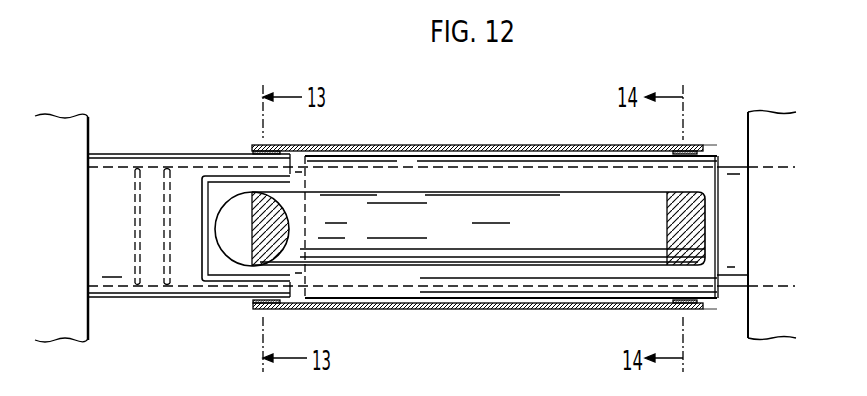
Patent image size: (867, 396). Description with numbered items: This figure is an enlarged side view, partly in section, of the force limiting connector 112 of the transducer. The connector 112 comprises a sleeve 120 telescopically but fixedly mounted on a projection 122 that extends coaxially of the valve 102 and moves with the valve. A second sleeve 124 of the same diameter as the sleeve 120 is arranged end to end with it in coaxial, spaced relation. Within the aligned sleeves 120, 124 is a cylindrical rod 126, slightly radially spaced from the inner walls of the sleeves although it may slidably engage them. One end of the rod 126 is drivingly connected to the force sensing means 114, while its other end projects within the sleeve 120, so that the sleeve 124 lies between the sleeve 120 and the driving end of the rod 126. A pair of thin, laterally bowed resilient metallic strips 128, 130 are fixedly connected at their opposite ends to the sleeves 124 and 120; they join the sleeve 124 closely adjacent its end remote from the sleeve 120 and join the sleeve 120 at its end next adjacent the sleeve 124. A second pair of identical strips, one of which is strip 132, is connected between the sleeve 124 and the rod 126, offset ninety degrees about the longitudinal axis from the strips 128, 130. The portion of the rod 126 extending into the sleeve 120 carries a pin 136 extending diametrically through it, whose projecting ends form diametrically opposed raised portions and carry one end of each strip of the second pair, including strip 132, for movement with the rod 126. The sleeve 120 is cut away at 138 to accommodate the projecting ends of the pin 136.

The valve 102 is at (92, 133).
The force sensing means 114 is at (748, 325).
The sleeve 120 is at (160, 155).
The projection 122 is at (144, 282).
The cylindrical rod 126 is at (737, 167).
The force limiting connector 112 is at (373, 128).
The second sleeve 124 is at (718, 125).
The resilient metallic strip 128 is at (497, 146).
The resilient metallic strip 130 is at (488, 310).
The resilient metallic strip 132 is at (433, 232).
The pin 136 is at (223, 233).
The cut away 138 is at (203, 196).